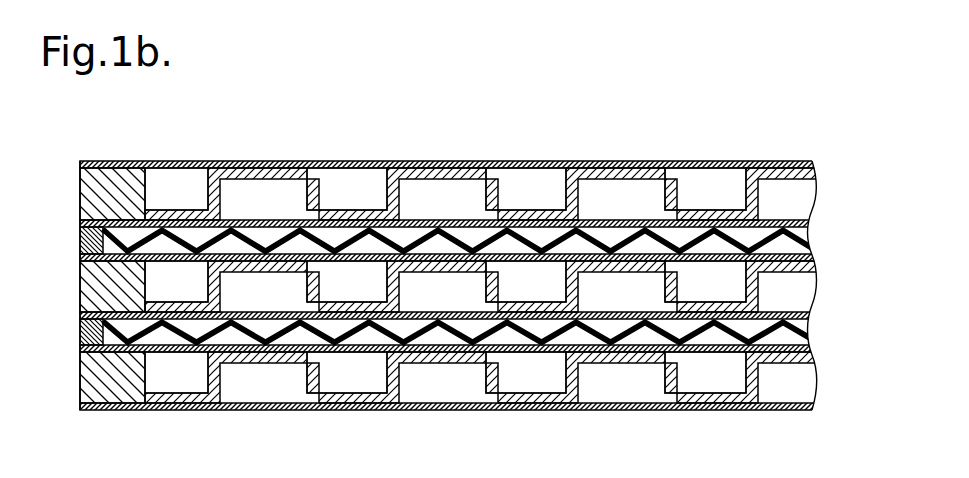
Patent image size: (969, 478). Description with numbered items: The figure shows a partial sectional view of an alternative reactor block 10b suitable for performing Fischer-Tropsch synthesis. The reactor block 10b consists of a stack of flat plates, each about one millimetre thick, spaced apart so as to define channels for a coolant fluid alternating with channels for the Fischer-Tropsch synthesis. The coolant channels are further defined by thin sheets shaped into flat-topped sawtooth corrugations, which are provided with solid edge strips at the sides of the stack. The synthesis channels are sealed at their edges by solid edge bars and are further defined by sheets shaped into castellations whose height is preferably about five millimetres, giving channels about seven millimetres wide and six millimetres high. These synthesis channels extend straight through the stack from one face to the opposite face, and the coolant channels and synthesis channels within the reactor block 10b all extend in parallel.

The reactor block 10b is at (591, 153).